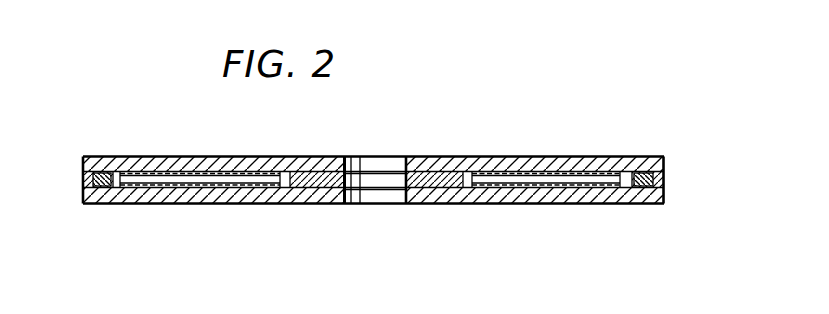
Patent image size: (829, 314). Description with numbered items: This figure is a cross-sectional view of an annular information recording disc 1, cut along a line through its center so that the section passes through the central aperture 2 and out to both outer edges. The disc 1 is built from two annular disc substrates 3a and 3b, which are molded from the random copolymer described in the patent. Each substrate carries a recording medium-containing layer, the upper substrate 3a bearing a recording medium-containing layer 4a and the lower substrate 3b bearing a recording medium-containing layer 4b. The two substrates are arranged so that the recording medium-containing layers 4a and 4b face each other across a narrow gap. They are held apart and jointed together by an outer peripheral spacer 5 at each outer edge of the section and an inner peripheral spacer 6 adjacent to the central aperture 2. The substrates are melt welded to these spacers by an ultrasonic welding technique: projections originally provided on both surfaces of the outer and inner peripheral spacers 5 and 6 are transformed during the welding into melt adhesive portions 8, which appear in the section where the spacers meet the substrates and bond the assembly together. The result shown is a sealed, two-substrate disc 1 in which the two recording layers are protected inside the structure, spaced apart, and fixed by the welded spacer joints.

The annular information recording disc 1 is at (634, 141).
The central aperture 2 is at (382, 171).
The annular disc substrate 3a is at (238, 157).
The annular disc substrate 3b is at (232, 198).
The recording medium-containing layer 4a is at (172, 157).
The recording medium-containing layer 4b is at (150, 204).
The outer peripheral spacer 5 is at (83, 182).
The inner peripheral spacer 6 is at (315, 196).
The melt adhesive portion 8 is at (312, 157).